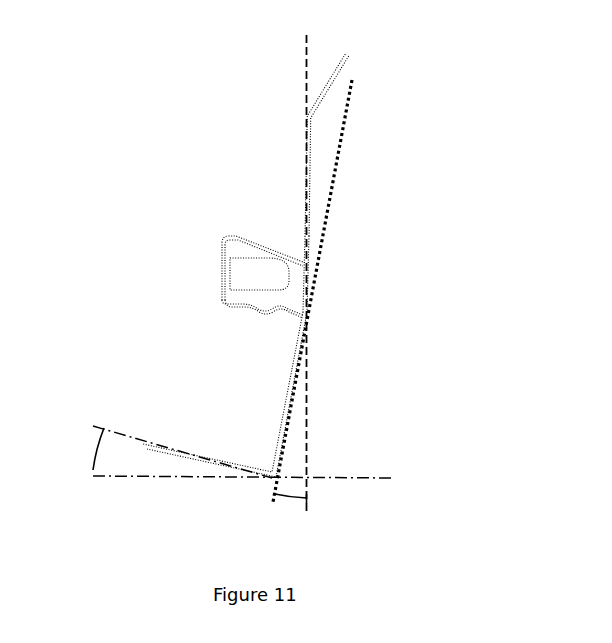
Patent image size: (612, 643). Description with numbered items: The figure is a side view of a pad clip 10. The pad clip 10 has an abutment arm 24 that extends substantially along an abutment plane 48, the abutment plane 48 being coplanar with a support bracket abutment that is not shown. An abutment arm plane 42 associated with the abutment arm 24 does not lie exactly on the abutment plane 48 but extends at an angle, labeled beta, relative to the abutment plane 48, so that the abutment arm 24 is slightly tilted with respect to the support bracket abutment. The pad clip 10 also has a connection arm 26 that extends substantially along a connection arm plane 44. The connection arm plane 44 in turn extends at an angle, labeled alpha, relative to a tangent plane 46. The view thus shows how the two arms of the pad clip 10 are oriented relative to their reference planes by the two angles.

The pad clip 10 is at (133, 37).
The abutment arm 24 is at (203, 245).
The connection arm 26 is at (187, 423).
The abutment arm plane 42 is at (338, 147).
The connection arm plane 44 is at (355, 480).
The tangent plane 46 is at (125, 434).
The abutment plane 48 is at (307, 412).